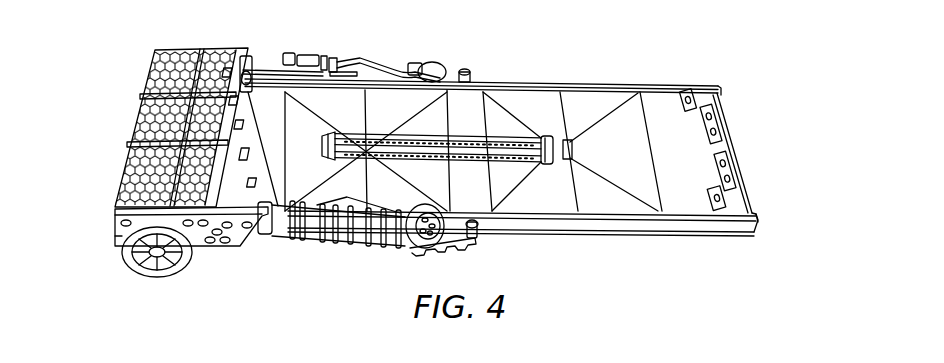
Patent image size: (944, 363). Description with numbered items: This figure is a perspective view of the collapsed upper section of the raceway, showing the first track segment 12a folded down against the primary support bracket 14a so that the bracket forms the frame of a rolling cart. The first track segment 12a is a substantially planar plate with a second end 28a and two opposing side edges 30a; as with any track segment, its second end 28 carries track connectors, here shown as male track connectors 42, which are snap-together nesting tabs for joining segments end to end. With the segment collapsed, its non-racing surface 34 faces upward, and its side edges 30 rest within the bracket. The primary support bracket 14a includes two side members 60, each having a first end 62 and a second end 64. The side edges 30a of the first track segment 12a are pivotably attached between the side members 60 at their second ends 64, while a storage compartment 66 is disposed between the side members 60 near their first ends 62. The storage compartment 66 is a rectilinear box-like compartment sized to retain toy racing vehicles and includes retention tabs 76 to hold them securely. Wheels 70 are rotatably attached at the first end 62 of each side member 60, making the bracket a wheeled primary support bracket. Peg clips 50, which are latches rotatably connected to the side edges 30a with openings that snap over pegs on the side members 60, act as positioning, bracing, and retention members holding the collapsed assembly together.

The first track segment 12a is at (708, 250).
The primary support bracket 14a is at (227, 240).
The second end 28 is at (755, 158).
The second end 28a is at (762, 197).
The side edges 30 is at (577, 227).
The side edges 30a is at (522, 82).
The non-racing surface 34 is at (590, 100).
The male track connectors 42 is at (737, 160).
The peg clips 50 is at (472, 242).
The side members 60 is at (330, 55).
The first end 62 is at (107, 242).
The second end 64 is at (448, 55).
The storage compartment 66 is at (188, 52).
The wheels 70 is at (158, 275).
The retention tabs 76 is at (247, 72).